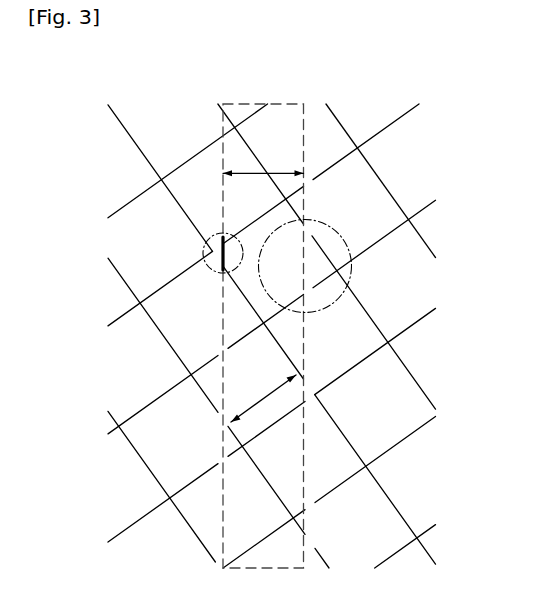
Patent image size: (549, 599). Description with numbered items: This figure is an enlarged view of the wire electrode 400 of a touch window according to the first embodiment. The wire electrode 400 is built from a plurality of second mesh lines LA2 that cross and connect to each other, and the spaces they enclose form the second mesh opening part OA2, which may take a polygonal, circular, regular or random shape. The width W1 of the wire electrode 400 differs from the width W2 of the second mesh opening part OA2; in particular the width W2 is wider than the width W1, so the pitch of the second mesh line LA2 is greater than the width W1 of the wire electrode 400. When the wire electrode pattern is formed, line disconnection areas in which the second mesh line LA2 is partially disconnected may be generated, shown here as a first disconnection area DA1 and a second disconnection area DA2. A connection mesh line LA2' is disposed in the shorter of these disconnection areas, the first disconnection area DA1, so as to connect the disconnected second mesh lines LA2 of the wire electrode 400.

The wire electrode 400 is at (274, 117).
The width of the wire electrode W1 is at (263, 161).
The width of the second mesh opening part W2 is at (263, 398).
The connection mesh line LA2' is at (129, 251).
The first disconnection area DA1 is at (213, 270).
The second mesh line LA2 is at (308, 336).
The second disconnection area DA2 is at (335, 230).
The second mesh opening part OA2 is at (417, 268).